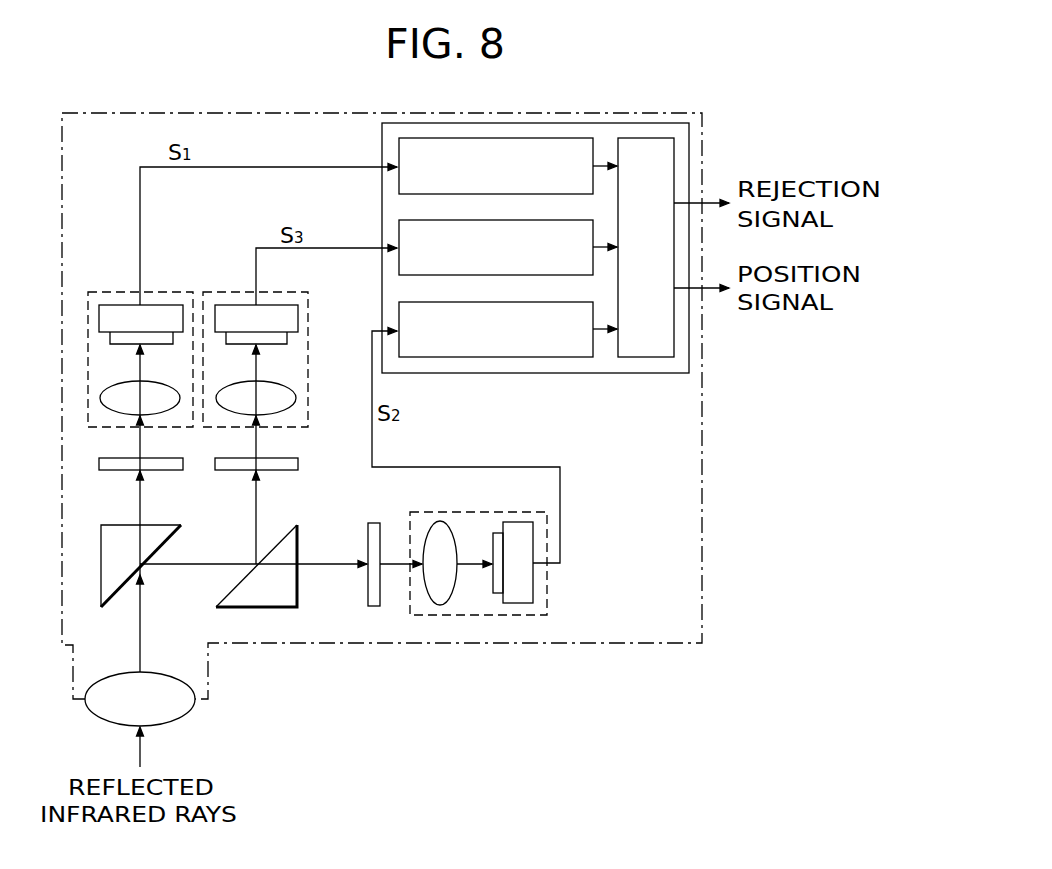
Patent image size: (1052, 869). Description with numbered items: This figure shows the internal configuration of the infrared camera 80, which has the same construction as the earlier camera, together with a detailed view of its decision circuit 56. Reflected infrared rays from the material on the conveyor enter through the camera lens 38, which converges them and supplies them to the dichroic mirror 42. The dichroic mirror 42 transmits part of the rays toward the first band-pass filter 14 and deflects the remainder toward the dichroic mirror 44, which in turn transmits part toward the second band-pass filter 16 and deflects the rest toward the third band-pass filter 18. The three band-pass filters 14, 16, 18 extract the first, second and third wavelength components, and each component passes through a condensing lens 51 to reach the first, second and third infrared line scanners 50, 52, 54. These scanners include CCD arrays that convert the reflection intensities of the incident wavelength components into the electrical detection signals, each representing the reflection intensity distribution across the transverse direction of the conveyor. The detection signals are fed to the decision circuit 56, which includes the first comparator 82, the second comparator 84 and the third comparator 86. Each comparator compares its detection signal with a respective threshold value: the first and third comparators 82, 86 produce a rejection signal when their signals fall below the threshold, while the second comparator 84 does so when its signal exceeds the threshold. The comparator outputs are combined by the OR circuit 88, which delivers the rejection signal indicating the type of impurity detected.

The first band-pass filter 14 is at (112, 472).
The second band-pass filter 16 is at (372, 522).
The third band-pass filter 18 is at (226, 472).
The camera lens 38 is at (185, 717).
The dichroic mirror 42 is at (112, 603).
The dichroic mirror 44 is at (225, 597).
The first infrared line scanner 50 is at (118, 305).
The condensing lens 51 is at (112, 414).
The second infrared line scanner 52 is at (517, 522).
The third infrared line scanner 54 is at (232, 305).
The decision circuit 56 is at (484, 373).
The infrared camera 80 is at (560, 644).
The first comparator 82 is at (398, 150).
The second comparator 84 is at (398, 314).
The third comparator 86 is at (398, 232).
The OR circuit 88 is at (650, 372).